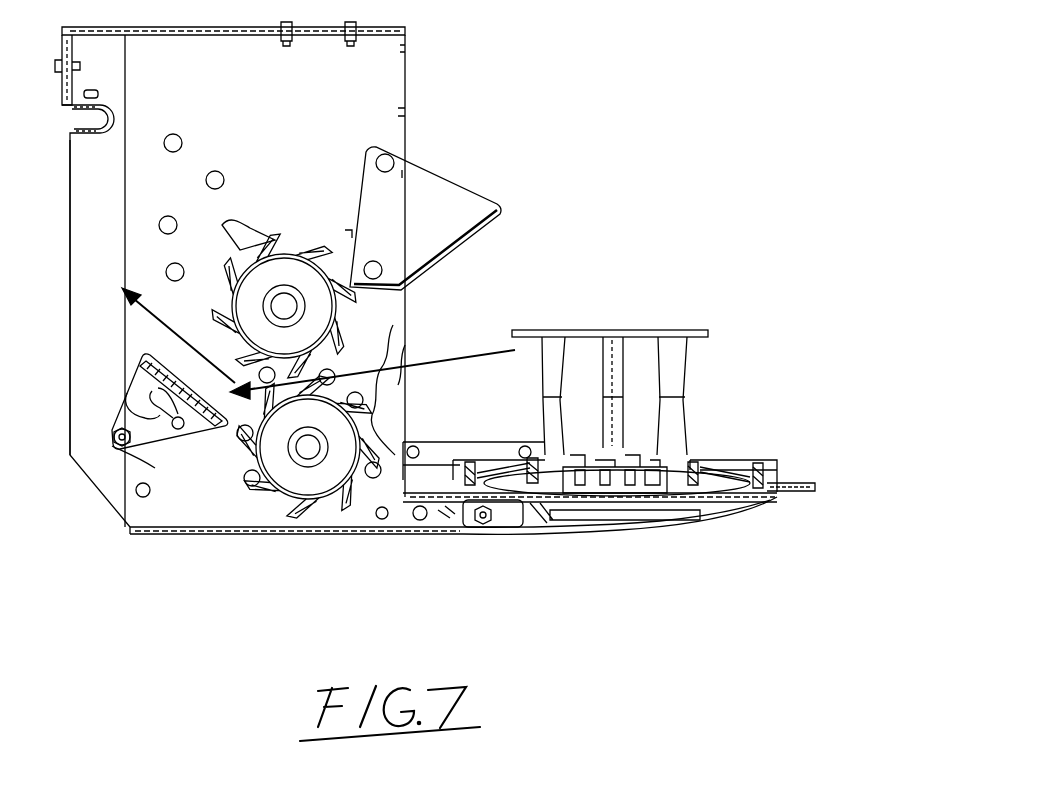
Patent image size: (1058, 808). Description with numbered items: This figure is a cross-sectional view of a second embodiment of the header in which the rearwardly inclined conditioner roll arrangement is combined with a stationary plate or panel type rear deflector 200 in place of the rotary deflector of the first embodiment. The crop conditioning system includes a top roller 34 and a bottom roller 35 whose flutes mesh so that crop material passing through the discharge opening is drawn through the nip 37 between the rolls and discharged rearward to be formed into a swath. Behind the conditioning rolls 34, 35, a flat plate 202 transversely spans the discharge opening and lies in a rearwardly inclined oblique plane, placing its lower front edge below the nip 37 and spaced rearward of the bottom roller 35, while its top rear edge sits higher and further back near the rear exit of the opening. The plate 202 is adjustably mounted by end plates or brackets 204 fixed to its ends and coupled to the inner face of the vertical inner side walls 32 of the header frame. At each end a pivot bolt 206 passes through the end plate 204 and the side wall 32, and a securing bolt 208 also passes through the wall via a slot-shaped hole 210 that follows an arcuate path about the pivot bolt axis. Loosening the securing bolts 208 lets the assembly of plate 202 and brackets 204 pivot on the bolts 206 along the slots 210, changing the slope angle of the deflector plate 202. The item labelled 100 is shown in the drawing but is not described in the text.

The inner side wall 32 is at (208, 512).
The top roller 34 is at (290, 255).
The bottom roller 35 is at (256, 509).
The nip 37 is at (355, 348).
The cover plate 100 is at (497, 207).
The rear deflector 200 is at (177, 449).
The flat plate 202 is at (138, 355).
The end plate 204 is at (150, 447).
The pivot bolt 206 is at (70, 453).
The securing bolt 208 is at (200, 438).
The slot-shaped hole 210 is at (127, 393).